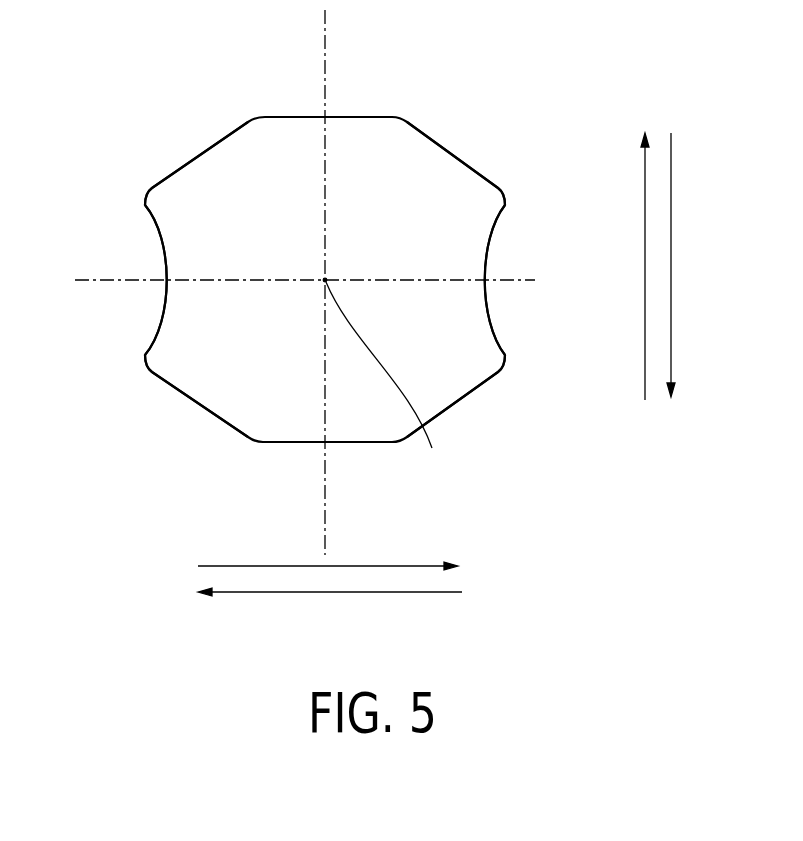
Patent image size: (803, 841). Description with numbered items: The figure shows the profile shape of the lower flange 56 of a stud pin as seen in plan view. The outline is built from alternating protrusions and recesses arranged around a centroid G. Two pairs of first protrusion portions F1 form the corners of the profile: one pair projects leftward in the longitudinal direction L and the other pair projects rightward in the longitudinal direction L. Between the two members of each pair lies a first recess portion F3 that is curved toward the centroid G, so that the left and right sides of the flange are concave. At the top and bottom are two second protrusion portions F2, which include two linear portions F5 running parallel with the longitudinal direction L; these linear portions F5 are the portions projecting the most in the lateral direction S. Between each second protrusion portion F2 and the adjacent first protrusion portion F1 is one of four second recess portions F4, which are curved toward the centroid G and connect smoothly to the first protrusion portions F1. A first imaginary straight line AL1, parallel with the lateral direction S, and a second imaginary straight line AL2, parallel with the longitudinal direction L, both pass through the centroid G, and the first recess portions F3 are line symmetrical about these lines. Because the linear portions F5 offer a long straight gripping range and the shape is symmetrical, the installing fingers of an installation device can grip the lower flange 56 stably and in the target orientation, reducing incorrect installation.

The lower flange 56 is at (472, 73).
The first protrusion portion F1 is at (145, 203).
The second protrusion portion F2 is at (270, 117).
The first recess portion F3 is at (165, 292).
The second recess portion F4 is at (200, 155).
The linear portion F5 is at (310, 117).
The centroid G is at (384, 380).
The first imaginary straight line AL1 is at (327, 40).
The second imaginary straight line AL2 is at (83, 280).
The lateral direction S is at (666, 266).
The longitudinal direction L is at (330, 595).